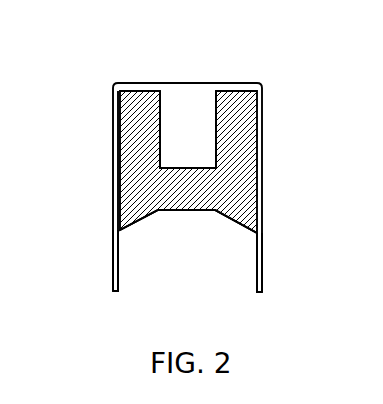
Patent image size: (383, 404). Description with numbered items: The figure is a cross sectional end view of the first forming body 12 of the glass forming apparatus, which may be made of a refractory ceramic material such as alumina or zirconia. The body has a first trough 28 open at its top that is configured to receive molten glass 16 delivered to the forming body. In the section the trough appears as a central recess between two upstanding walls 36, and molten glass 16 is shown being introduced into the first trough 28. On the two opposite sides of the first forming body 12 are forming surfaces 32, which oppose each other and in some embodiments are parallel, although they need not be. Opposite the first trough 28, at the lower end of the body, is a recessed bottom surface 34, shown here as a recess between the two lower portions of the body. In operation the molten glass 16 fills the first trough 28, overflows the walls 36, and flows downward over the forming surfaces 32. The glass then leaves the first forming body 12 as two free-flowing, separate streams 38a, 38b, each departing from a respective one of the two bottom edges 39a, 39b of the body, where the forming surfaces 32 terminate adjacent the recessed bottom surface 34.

The first forming body 12 is at (104, 112).
The molten glass 16 is at (187, 82).
The first trough 28 is at (199, 104).
The forming surfaces 32 is at (119, 182).
The recessed bottom surface 34 is at (222, 215).
The walls 36 is at (146, 91).
The first stream of molten glass 38a is at (113, 272).
The second stream of molten glass 38b is at (262, 272).
The first bottom edge 39a is at (122, 233).
The second bottom edge 39b is at (257, 235).